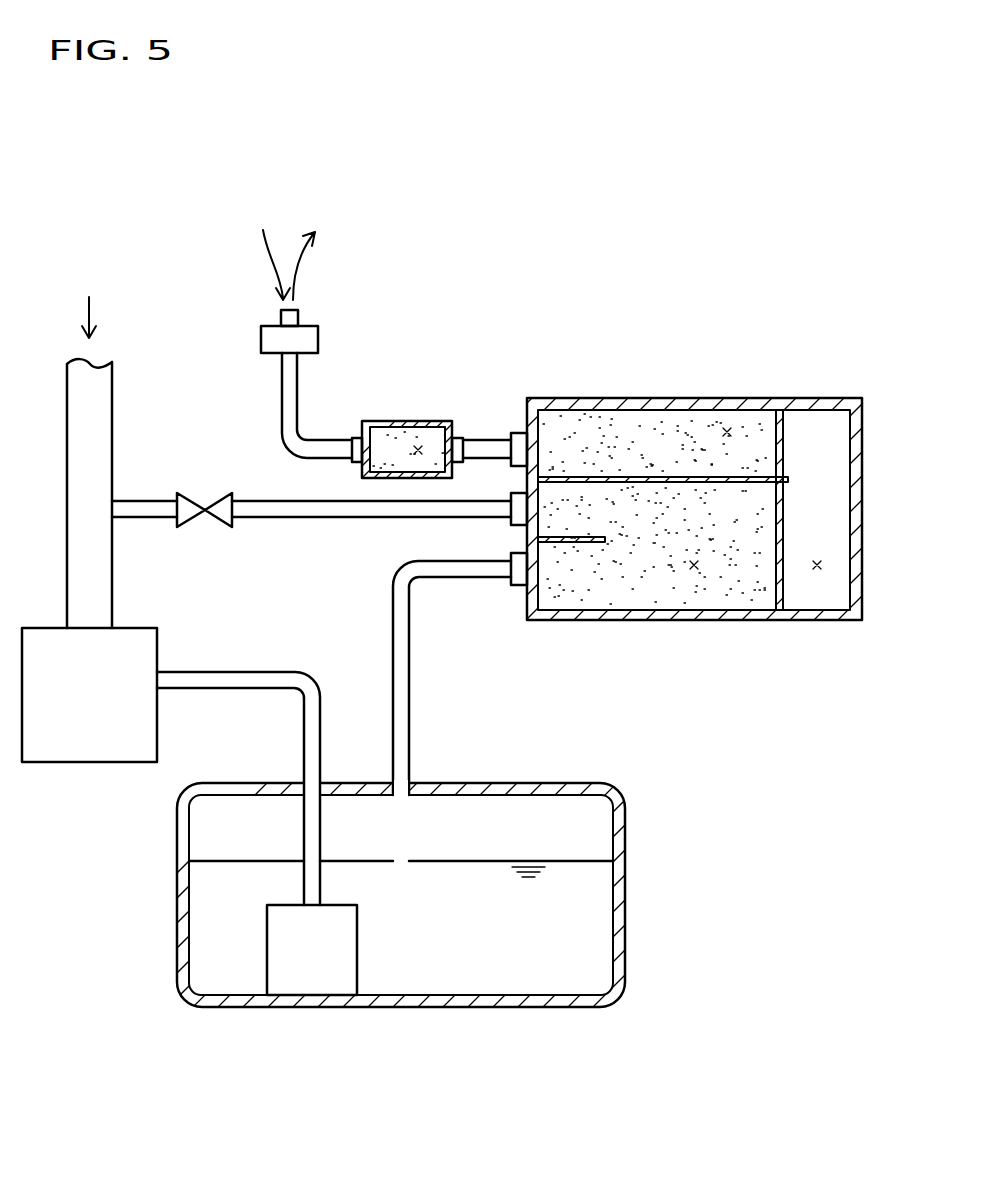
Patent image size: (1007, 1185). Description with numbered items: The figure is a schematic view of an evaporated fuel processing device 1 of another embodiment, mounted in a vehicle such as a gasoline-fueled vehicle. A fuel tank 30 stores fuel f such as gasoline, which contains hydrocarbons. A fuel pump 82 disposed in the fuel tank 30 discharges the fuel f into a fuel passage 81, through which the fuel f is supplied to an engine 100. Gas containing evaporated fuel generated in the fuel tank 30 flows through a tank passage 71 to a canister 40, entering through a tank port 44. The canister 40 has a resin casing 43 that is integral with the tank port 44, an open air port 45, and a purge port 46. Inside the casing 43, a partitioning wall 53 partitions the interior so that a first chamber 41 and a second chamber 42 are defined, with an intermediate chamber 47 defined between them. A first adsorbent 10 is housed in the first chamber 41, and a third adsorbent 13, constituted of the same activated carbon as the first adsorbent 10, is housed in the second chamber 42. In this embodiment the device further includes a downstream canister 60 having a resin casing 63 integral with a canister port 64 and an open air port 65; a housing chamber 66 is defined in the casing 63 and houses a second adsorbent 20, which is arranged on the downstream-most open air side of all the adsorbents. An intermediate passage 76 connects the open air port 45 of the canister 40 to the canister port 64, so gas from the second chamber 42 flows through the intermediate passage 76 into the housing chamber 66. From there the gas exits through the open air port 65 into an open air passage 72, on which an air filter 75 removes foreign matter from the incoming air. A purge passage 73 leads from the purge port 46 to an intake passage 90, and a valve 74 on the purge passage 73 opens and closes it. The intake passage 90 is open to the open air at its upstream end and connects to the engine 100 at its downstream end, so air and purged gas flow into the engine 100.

The evaporated fuel processing device 1 is at (767, 712).
The first adsorbent 10 is at (632, 600).
The third adsorbent 13 is at (661, 425).
The second adsorbent 20 is at (385, 450).
The fuel tank 30 is at (617, 945).
The canister 40 is at (618, 494).
The first chamber 41 is at (694, 567).
The second chamber 42 is at (727, 433).
The casing 43 is at (565, 403).
The tank port 44 is at (507, 580).
The open air port 45 is at (520, 433).
The purge port 46 is at (510, 518).
The intermediate chamber 47 is at (817, 567).
The partitioning wall 53 is at (625, 477).
The downstream canister 60 is at (387, 443).
The casing 63 is at (412, 427).
The canister port 64 is at (458, 438).
The open air port 65 is at (358, 438).
The housing chamber 66 is at (418, 452).
The tank passage 71 is at (412, 692).
The open air passage 72 is at (318, 438).
The purge passage 73 is at (265, 500).
The valve 74 is at (197, 497).
The air filter 75 is at (260, 339).
The intermediate passage 76 is at (490, 440).
The fuel passage 81 is at (268, 672).
The fuel pump 82 is at (358, 950).
The intake passage 90 is at (113, 405).
The engine 100 is at (157, 650).
The fuel f is at (600, 900).